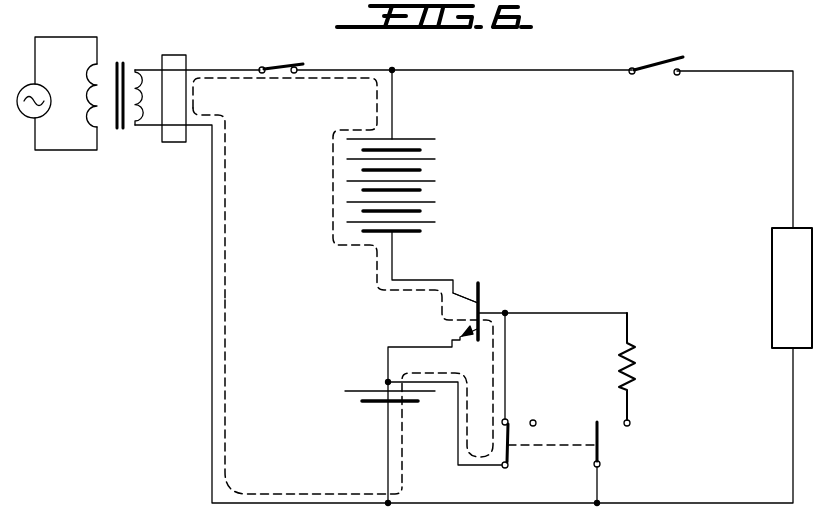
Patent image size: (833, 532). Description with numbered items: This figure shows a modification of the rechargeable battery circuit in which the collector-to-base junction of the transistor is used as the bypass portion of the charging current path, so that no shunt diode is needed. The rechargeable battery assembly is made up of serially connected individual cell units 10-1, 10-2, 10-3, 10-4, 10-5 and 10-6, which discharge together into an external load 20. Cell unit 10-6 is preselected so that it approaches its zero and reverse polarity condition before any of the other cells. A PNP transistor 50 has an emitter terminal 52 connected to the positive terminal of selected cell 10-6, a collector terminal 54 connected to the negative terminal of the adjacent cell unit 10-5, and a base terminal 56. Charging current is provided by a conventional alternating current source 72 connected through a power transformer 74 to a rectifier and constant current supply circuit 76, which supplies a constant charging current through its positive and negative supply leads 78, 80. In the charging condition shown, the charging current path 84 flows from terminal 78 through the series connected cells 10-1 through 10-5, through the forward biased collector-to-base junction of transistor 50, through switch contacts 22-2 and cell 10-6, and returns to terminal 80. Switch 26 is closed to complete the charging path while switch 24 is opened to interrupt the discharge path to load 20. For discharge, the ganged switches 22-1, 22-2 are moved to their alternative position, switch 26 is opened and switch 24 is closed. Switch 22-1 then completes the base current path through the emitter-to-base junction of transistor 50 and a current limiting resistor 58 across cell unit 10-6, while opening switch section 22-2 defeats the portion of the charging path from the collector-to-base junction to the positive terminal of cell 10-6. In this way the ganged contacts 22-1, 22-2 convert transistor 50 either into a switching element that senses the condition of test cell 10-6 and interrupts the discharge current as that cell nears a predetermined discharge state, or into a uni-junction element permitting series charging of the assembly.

The cell unit 10-1 is at (436, 150).
The cell unit 10-2 is at (436, 171).
The cell unit 10-3 is at (436, 192).
The cell unit 10-4 is at (436, 213).
The cell unit 10-5 is at (436, 234).
The cell unit 10-6 is at (377, 413).
The external load 20 is at (772, 301).
The switch 22-1 is at (599, 437).
The switch contacts 22-2 is at (510, 450).
The switch 24 is at (658, 46).
The switch 26 is at (287, 66).
The transistor 50 is at (507, 317).
The emitter terminal 52 is at (434, 354).
The collector terminal 54 is at (476, 274).
The base terminal 56 is at (495, 312).
The current limiting resistor 58 is at (637, 373).
The alternating current source 72 is at (52, 101).
The power transformer 74 is at (113, 62).
The rectifier and constant current supply circuit 76 is at (172, 142).
The positive supply lead 78 is at (197, 68).
The negative supply lead 80 is at (200, 127).
The charging current path 84 is at (226, 362).